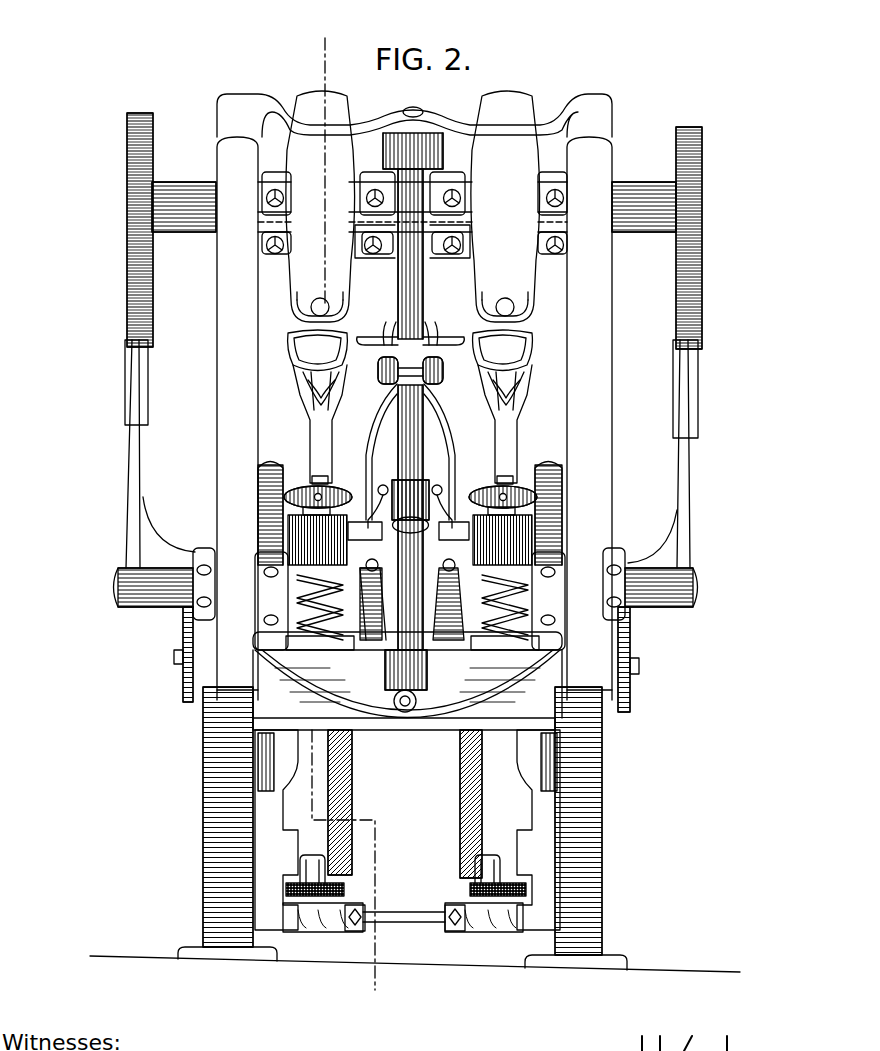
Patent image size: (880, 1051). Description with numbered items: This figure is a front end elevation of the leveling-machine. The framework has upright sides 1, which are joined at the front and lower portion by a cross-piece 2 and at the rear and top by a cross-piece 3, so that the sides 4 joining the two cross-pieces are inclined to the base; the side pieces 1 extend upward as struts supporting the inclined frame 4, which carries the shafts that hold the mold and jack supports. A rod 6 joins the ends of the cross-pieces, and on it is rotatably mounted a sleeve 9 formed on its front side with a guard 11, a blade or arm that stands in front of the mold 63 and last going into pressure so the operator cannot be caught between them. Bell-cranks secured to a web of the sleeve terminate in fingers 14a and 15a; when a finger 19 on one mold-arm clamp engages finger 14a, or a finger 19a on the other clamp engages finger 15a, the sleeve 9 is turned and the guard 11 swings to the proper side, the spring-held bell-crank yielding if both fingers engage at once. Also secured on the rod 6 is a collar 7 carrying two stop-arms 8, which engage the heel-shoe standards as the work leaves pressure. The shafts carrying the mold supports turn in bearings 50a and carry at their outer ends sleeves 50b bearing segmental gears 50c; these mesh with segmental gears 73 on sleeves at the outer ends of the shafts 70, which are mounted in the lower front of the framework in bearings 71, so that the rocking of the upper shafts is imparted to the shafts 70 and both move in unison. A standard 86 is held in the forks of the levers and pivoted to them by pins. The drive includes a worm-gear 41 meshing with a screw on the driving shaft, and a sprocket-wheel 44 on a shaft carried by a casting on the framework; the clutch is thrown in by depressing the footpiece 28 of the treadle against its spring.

The upright sides of the framework 1 is at (215, 848).
The front cross-piece 2 is at (434, 705).
The rear cross-piece 3 is at (455, 128).
The inclined frame sides 4 is at (648, 426).
The rod 6 is at (418, 431).
The collar 7 is at (406, 490).
The stop-arms 8 is at (366, 512).
The sleeve 9 is at (396, 355).
The guard 11 is at (414, 296).
The finger of bell-crank 14 14a is at (462, 340).
The finger of bell-crank 15 15a is at (366, 340).
The finger of clamp 18 19 is at (465, 228).
The finger of clamp 18a 19a is at (353, 238).
The footpiece 28 is at (313, 900).
The worm-gear 41 is at (283, 455).
The sprocket-wheel 44 is at (183, 686).
The bearings 50a is at (640, 290).
The sleeves 50b is at (650, 195).
The segmental gears 50c is at (740, 286).
The mold 63 is at (413, 206).
The shafts 70 is at (117, 581).
The bearings 71 is at (201, 552).
The segmental gear 73 is at (124, 378).
The standard 86 is at (410, 481).